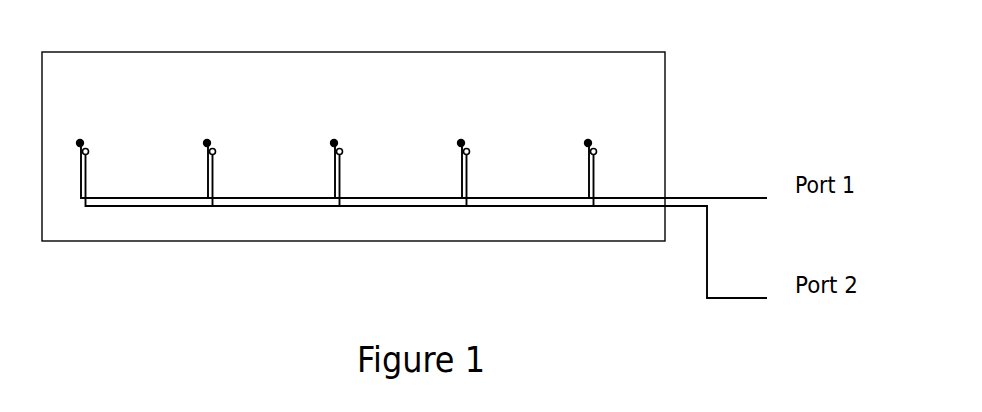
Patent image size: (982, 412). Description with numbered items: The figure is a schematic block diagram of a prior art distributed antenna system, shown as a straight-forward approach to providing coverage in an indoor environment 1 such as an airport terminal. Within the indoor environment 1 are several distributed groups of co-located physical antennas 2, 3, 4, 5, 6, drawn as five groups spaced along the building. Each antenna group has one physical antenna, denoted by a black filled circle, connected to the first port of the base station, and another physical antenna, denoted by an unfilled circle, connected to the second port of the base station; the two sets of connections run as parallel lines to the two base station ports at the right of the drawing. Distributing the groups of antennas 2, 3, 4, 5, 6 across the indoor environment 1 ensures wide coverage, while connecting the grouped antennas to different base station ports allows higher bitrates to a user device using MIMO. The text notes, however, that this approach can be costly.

The indoor environment 1 is at (53, 88).
The co-located physical antennas 2 is at (77, 178).
The co-located physical antennas 3 is at (204, 178).
The co-located physical antennas 4 is at (331, 178).
The co-located physical antennas 5 is at (458, 178).
The co-located physical antennas 6 is at (585, 178).